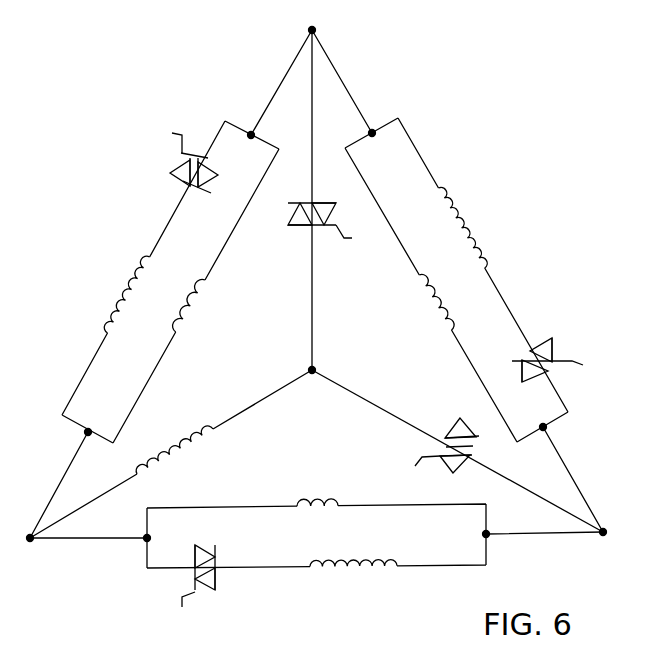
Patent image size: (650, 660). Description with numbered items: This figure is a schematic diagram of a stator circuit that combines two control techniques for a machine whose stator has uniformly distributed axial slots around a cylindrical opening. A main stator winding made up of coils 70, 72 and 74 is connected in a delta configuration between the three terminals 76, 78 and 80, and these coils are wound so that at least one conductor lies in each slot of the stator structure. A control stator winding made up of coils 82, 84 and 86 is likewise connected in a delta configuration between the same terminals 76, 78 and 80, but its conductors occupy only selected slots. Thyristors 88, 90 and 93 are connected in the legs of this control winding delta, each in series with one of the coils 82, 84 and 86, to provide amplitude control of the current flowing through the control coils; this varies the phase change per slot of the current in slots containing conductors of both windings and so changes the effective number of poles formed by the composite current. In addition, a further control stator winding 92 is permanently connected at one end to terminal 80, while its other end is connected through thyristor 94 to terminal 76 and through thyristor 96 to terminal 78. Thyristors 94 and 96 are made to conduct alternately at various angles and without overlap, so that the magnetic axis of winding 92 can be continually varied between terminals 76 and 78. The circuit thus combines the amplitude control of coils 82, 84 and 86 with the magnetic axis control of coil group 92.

The main stator winding coil 70 is at (197, 298).
The main stator winding coil 72 is at (427, 291).
The main stator winding coil 74 is at (328, 503).
The terminal 76 is at (316, 29).
The terminal 78 is at (604, 536).
The terminal 80 is at (30, 542).
The control stator winding coil 82 is at (114, 300).
The control stator winding coil 84 is at (468, 228).
The control stator winding coil 86 is at (358, 573).
The thyristor 88 is at (168, 173).
The thyristor 90 is at (558, 350).
The control stator winding 92 is at (187, 445).
The thyristor 93 is at (213, 590).
The thyristor 94 is at (300, 229).
The thyristor 96 is at (457, 470).